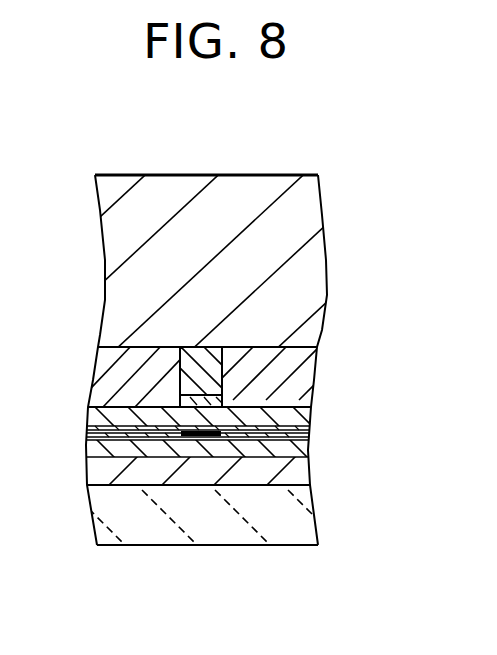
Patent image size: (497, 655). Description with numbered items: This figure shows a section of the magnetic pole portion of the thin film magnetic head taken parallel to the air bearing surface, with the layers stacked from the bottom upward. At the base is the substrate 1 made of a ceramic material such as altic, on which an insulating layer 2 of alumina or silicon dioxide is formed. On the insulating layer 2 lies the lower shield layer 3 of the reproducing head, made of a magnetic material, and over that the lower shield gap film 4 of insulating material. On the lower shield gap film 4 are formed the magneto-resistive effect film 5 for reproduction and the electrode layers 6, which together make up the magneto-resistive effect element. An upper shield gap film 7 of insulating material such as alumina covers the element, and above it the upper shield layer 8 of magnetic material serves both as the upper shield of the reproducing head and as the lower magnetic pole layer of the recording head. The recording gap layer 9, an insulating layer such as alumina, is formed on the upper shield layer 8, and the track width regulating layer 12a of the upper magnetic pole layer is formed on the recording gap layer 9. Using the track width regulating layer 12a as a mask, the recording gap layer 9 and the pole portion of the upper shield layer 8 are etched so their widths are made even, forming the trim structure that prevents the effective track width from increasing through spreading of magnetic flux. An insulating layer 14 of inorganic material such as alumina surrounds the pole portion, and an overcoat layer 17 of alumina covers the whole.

The substrate 1 is at (105, 537).
The insulating layer 2 is at (128, 461).
The lower shield layer 3 is at (152, 450).
The lower shield gap film 4 is at (238, 444).
The magneto-resistive effect film 5 is at (205, 438).
The electrode layers 6 is at (264, 438).
The upper shield gap film 7 is at (172, 441).
The upper shield layer 8 is at (295, 418).
The recording gap layer 9 is at (226, 389).
The track width regulating layer 12a is at (195, 354).
The insulating layer 14 is at (124, 354).
The overcoat layer 17 is at (278, 189).